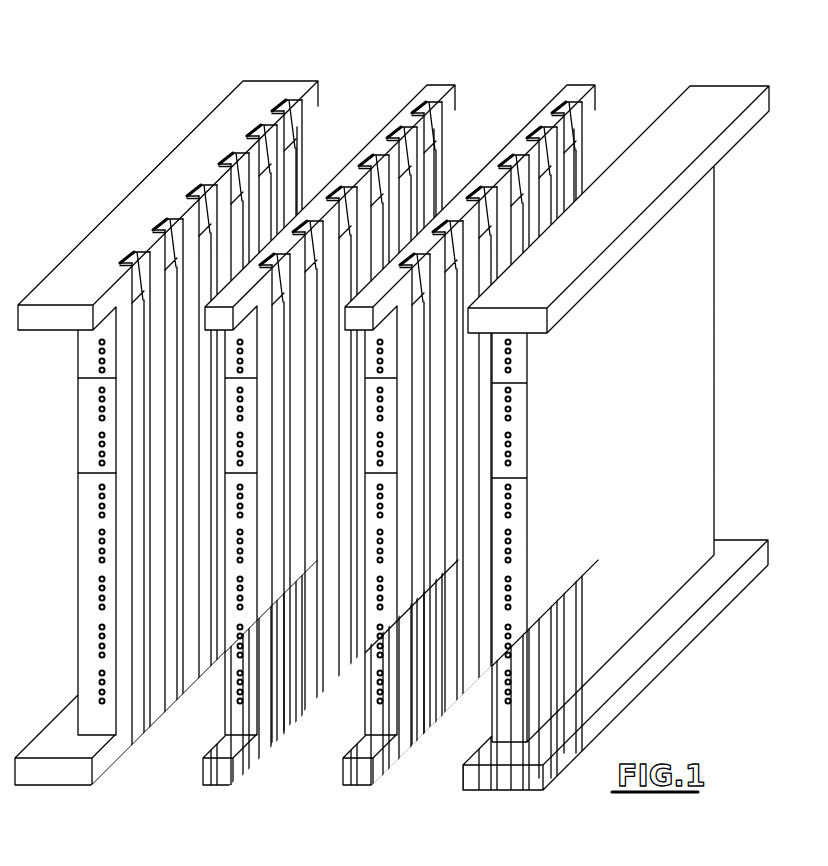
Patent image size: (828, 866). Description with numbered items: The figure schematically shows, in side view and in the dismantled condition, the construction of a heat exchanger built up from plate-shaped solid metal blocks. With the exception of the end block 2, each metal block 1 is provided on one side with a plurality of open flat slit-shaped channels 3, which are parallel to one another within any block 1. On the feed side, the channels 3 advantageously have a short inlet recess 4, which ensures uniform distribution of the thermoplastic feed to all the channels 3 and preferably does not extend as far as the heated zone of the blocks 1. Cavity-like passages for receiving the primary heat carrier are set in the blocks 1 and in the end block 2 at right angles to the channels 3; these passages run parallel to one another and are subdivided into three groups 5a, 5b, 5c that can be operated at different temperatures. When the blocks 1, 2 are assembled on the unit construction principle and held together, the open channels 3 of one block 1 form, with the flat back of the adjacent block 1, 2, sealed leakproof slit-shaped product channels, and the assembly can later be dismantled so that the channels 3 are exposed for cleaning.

The metal block 1 is at (283, 93).
The end block 2 is at (722, 101).
The open flat slit-shaped channels 3 is at (165, 688).
The inlet recess 4 is at (402, 123).
The first group of passages 5a is at (90, 358).
The second group of passages 5b is at (90, 442).
The third group of passages 5c is at (90, 565).